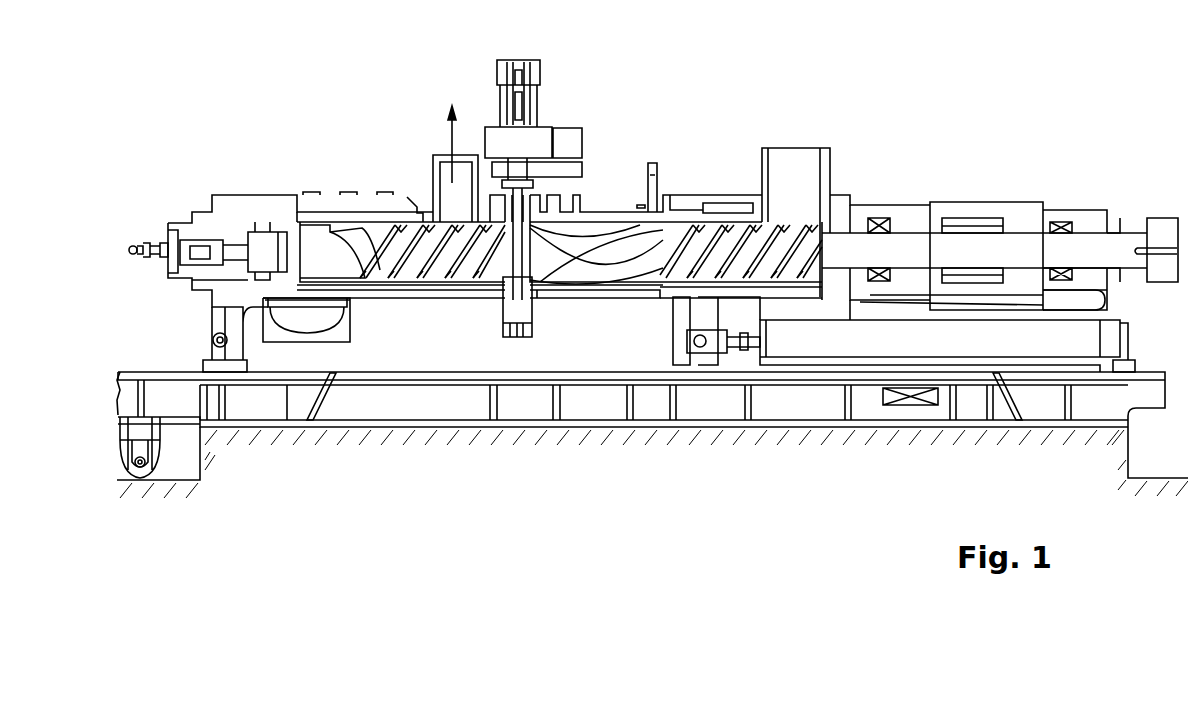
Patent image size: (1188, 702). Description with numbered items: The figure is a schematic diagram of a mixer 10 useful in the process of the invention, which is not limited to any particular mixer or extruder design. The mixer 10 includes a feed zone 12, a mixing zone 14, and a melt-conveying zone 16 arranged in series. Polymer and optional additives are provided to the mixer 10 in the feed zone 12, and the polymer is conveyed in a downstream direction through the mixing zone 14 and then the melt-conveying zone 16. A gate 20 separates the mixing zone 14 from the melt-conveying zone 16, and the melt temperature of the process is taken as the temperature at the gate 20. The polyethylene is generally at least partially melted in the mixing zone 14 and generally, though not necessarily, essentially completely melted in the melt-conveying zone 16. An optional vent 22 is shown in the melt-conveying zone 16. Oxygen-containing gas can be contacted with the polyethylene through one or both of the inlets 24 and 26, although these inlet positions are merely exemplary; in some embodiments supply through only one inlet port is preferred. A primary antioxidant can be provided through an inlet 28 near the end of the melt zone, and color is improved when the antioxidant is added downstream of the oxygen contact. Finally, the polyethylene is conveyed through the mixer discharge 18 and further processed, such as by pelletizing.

The mixer 10 is at (930, 136).
The feed zone 12 is at (822, 190).
The mixing zone 14 is at (532, 340).
The melt-conveying zone 16 is at (287, 300).
The mixer discharge 18 is at (300, 333).
The gate 20 is at (516, 340).
The vent 22 is at (443, 157).
The inlet 24 is at (742, 217).
The inlet 26 is at (580, 193).
The inlet 28 is at (313, 192).